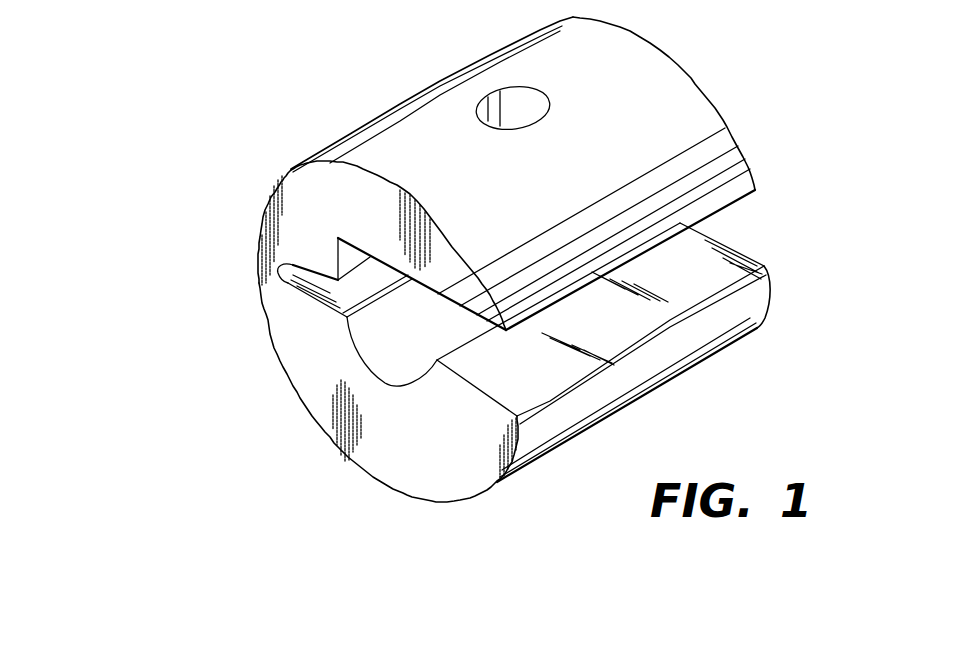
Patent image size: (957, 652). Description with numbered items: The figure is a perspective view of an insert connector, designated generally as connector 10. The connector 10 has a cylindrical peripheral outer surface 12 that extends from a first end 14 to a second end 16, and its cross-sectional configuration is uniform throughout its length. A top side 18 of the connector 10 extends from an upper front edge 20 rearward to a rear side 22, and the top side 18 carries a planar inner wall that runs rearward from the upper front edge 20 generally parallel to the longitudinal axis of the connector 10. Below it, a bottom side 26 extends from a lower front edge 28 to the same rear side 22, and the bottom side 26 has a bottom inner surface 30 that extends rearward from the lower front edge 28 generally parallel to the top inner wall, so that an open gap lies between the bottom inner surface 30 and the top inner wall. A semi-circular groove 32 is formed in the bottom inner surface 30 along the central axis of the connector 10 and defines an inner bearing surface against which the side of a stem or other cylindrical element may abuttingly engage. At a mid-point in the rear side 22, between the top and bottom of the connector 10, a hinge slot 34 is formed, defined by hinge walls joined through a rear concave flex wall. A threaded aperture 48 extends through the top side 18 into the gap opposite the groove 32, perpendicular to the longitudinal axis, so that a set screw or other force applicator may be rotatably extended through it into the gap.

The connector 10 is at (178, 128).
The cylindrical peripheral outer surface 12 is at (378, 140).
The first end 14 is at (447, 443).
The second end 16 is at (740, 251).
The top side 18 is at (652, 61).
The upper front edge 20 is at (727, 201).
The rear side 22 is at (262, 283).
The bottom side 26 is at (395, 450).
The lower front edge 28 is at (750, 333).
The bottom inner surface 30 is at (575, 354).
The semi-circular groove 32 is at (387, 357).
The hinge slot 34 is at (300, 283).
The threaded aperture 48 is at (517, 105).